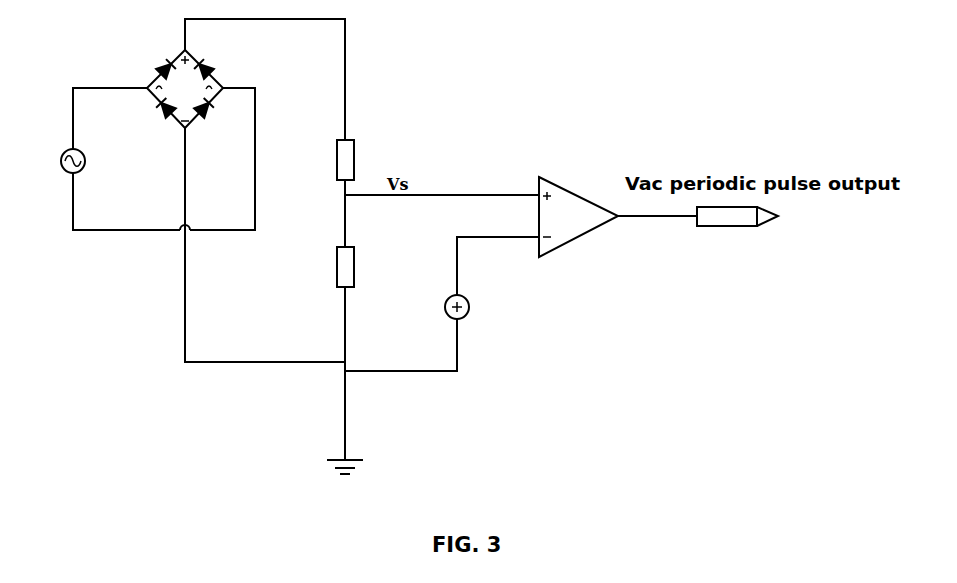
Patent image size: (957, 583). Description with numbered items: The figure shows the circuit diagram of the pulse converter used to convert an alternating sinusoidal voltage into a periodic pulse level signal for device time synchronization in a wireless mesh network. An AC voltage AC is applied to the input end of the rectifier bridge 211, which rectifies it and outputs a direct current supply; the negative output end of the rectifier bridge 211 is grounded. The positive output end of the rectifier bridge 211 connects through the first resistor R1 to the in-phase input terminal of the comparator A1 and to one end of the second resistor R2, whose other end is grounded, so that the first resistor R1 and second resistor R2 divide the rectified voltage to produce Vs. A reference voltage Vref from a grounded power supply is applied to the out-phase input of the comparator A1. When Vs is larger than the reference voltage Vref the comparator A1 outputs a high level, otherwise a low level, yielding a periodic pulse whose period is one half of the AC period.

The rectifier bridge 211 is at (216, 76).
The first resistor R1 is at (325, 160).
The second resistor R2 is at (325, 267).
The comparator A1 is at (578, 209).
The AC voltage AC is at (55, 161).
The reference voltage Vref is at (433, 307).